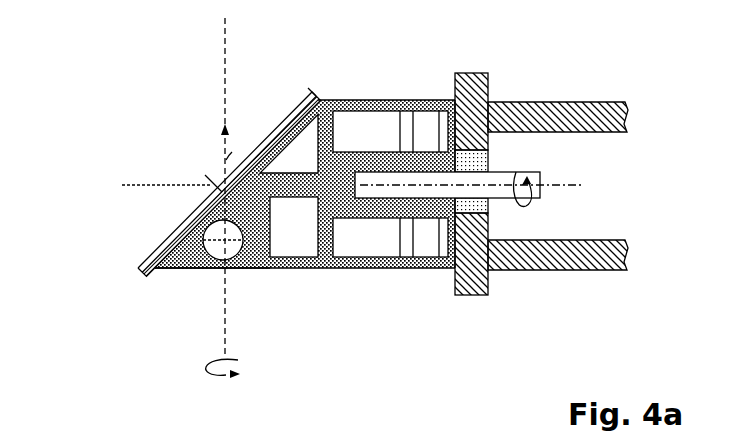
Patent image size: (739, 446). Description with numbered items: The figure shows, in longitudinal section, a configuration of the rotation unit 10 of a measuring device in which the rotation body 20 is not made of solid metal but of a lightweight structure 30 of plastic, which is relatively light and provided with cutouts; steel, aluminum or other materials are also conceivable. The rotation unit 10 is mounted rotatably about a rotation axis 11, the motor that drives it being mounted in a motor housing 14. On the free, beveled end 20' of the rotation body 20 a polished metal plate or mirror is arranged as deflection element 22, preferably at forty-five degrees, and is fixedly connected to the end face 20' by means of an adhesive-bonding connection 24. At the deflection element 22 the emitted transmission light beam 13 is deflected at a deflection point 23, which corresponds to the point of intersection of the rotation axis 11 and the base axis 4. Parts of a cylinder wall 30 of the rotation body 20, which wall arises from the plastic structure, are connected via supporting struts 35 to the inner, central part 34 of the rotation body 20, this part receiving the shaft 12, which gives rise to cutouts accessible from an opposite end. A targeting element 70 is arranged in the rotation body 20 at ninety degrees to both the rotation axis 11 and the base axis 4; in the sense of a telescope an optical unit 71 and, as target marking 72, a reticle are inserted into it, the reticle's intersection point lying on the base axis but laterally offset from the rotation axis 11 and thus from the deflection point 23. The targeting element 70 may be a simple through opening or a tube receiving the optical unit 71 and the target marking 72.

The base axis 4 is at (220, 322).
The rotation unit 10 is at (362, 185).
The rotation axis 11 is at (560, 182).
The shaft 12 is at (528, 188).
The transmission light beam 13 is at (167, 185).
The motor housing 14 is at (593, 295).
The rotation body 20 is at (212, 184).
The beveled end 20' is at (234, 154).
The deflection element 22 is at (213, 148).
The deflection point 23 is at (209, 179).
The adhesive-bonding connection 24 is at (318, 100).
The lightweight structure 30 is at (395, 193).
The inner, central part 34 is at (439, 100).
The supporting struts 35 is at (405, 101).
The targeting element 70 is at (188, 284).
The optical unit 71 is at (208, 272).
The target marking 72 is at (243, 272).